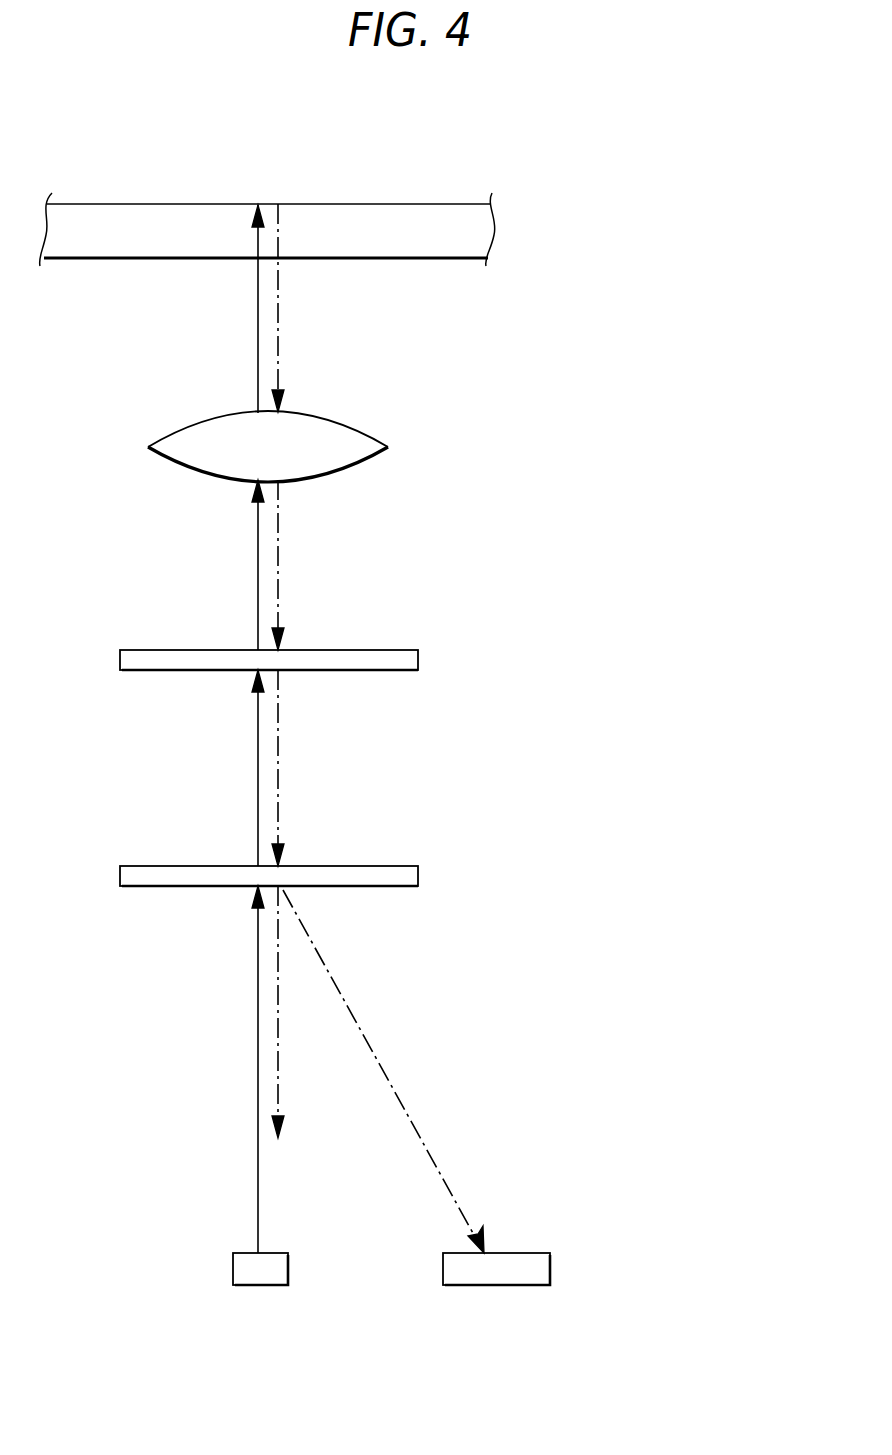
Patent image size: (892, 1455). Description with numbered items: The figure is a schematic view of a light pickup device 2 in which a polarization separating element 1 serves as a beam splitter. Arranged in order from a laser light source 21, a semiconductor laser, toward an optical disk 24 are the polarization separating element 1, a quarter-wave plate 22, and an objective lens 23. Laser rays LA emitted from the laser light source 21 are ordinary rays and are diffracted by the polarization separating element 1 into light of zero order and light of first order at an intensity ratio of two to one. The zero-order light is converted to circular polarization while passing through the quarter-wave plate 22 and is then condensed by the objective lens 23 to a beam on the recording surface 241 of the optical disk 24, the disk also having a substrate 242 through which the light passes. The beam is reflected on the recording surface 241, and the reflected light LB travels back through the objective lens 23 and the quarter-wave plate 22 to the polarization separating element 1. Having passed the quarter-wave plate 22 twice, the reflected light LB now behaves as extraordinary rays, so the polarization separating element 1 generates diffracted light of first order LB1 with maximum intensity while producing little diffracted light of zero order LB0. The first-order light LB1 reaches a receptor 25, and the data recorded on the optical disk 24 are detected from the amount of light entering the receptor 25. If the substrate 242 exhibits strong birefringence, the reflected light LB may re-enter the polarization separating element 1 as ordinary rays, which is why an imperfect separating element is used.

The light pickup device 2 is at (703, 277).
The optical disk 24 is at (120, 210).
The recording surface 241 is at (356, 213).
The substrate 242 is at (458, 242).
The objective lens 23 is at (175, 452).
The quarter-wave plate 22 is at (120, 656).
The polarization separating element 1 is at (120, 872).
The laser light source 21 is at (233, 1268).
The receptor 25 is at (443, 1268).
The laser rays LA is at (264, 1164).
The reflected light LB is at (272, 303).
The diffracted light of zero order LB0 is at (272, 1056).
The diffracted light of first order LB1 is at (370, 1056).